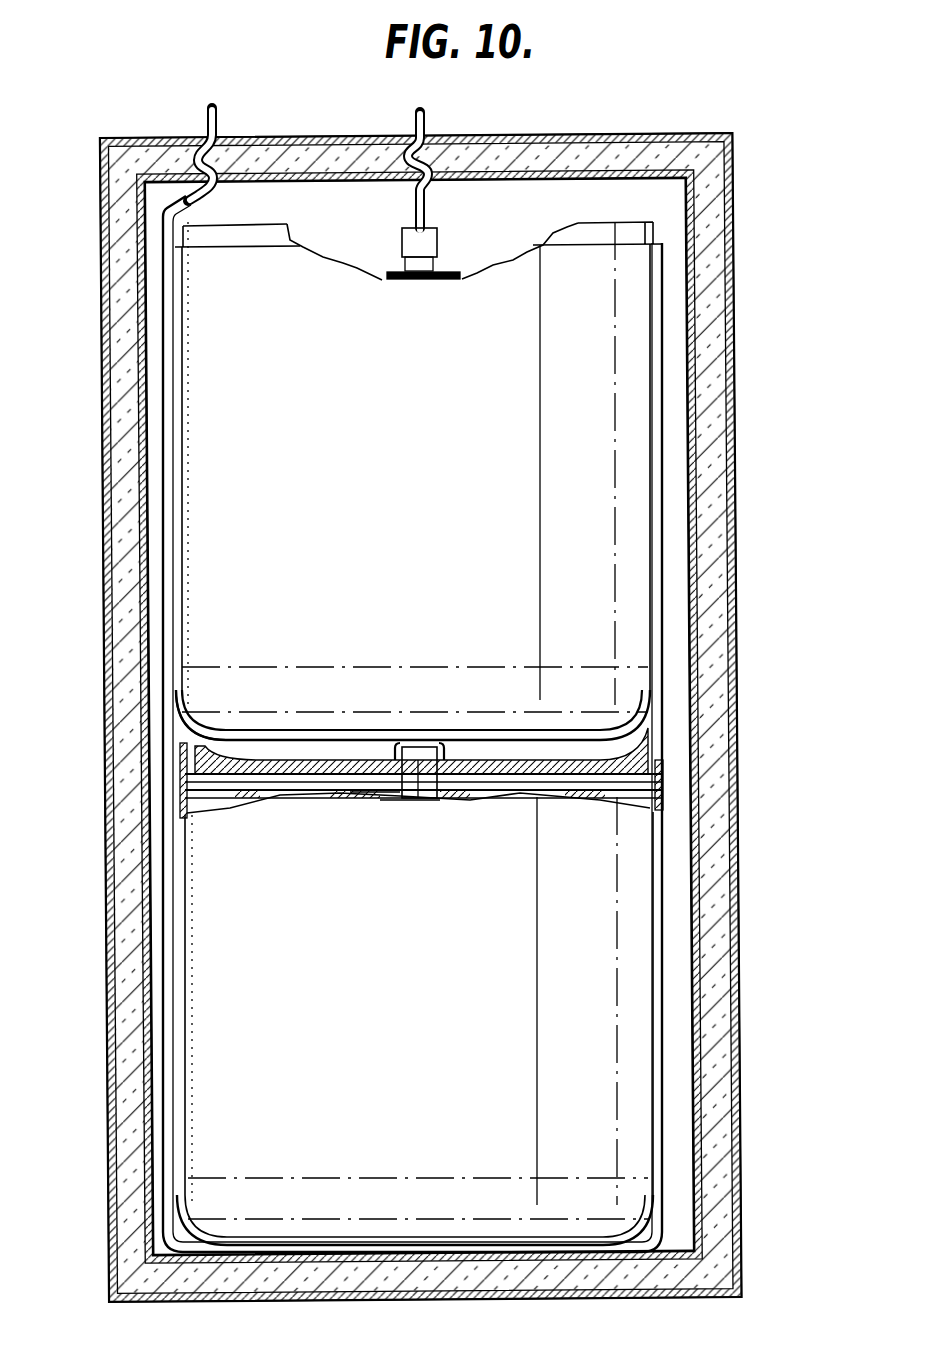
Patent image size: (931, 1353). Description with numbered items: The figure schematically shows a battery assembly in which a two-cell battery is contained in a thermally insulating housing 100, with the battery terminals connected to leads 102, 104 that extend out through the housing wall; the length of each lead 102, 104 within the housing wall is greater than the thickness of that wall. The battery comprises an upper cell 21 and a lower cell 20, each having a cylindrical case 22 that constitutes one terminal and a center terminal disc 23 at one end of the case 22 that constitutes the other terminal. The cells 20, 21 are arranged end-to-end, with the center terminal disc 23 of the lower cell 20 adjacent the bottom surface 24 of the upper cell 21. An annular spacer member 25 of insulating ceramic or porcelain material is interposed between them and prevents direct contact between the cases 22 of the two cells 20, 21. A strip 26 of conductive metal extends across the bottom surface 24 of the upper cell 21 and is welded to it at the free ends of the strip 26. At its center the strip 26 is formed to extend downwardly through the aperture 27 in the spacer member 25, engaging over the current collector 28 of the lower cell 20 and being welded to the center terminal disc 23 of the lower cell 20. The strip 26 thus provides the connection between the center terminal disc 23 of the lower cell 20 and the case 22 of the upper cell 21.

The thermally insulating housing 100 is at (735, 155).
The lead 102 is at (206, 121).
The lead 104 is at (414, 123).
The cylindrical case 22 is at (655, 398).
The upper cell 21 is at (432, 467).
The lower cell 20 is at (432, 995).
The center terminal disc 23 is at (430, 272).
The bottom surface 24 is at (412, 742).
The annular spacer member 25 is at (647, 733).
The strip 26 is at (195, 708).
The aperture 27 is at (370, 770).
The current collector 28 is at (413, 772).